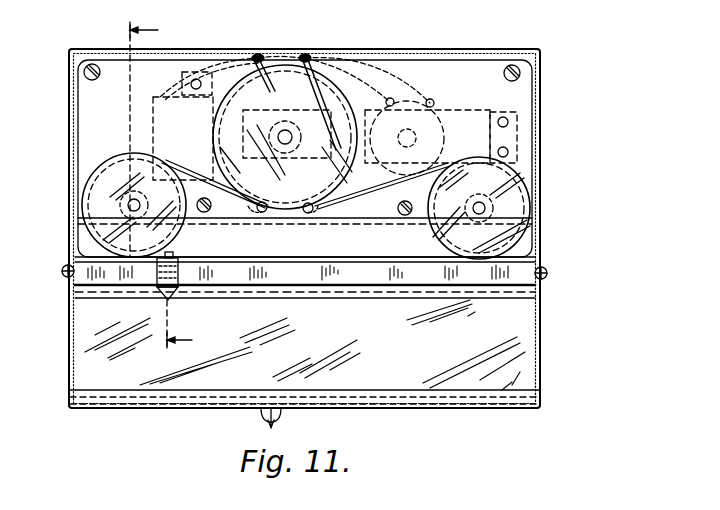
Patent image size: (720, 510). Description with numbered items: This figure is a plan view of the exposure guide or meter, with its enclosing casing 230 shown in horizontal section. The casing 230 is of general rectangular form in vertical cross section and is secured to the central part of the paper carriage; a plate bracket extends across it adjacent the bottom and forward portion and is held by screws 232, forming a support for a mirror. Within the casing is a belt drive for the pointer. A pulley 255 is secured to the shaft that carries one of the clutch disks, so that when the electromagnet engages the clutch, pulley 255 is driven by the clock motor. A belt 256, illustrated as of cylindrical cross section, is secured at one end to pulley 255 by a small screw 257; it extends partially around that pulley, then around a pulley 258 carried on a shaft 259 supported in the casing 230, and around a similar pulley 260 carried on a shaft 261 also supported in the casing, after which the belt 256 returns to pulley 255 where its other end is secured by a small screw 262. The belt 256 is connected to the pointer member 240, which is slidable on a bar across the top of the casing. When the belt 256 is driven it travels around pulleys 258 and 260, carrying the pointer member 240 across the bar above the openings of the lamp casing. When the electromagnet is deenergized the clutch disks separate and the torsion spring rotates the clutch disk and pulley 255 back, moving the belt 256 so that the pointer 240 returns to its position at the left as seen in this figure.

The casing 230 is at (541, 103).
The screws 232 is at (543, 272).
The pointer member 240 is at (175, 292).
The pulley 255 is at (217, 125).
The belt 256 is at (402, 187).
The small screw 257 is at (232, 100).
The pulley 258 is at (93, 173).
The shaft 259 is at (128, 205).
The pulley 260 is at (513, 185).
The shaft 261 is at (487, 205).
The small screw 262 is at (256, 188).